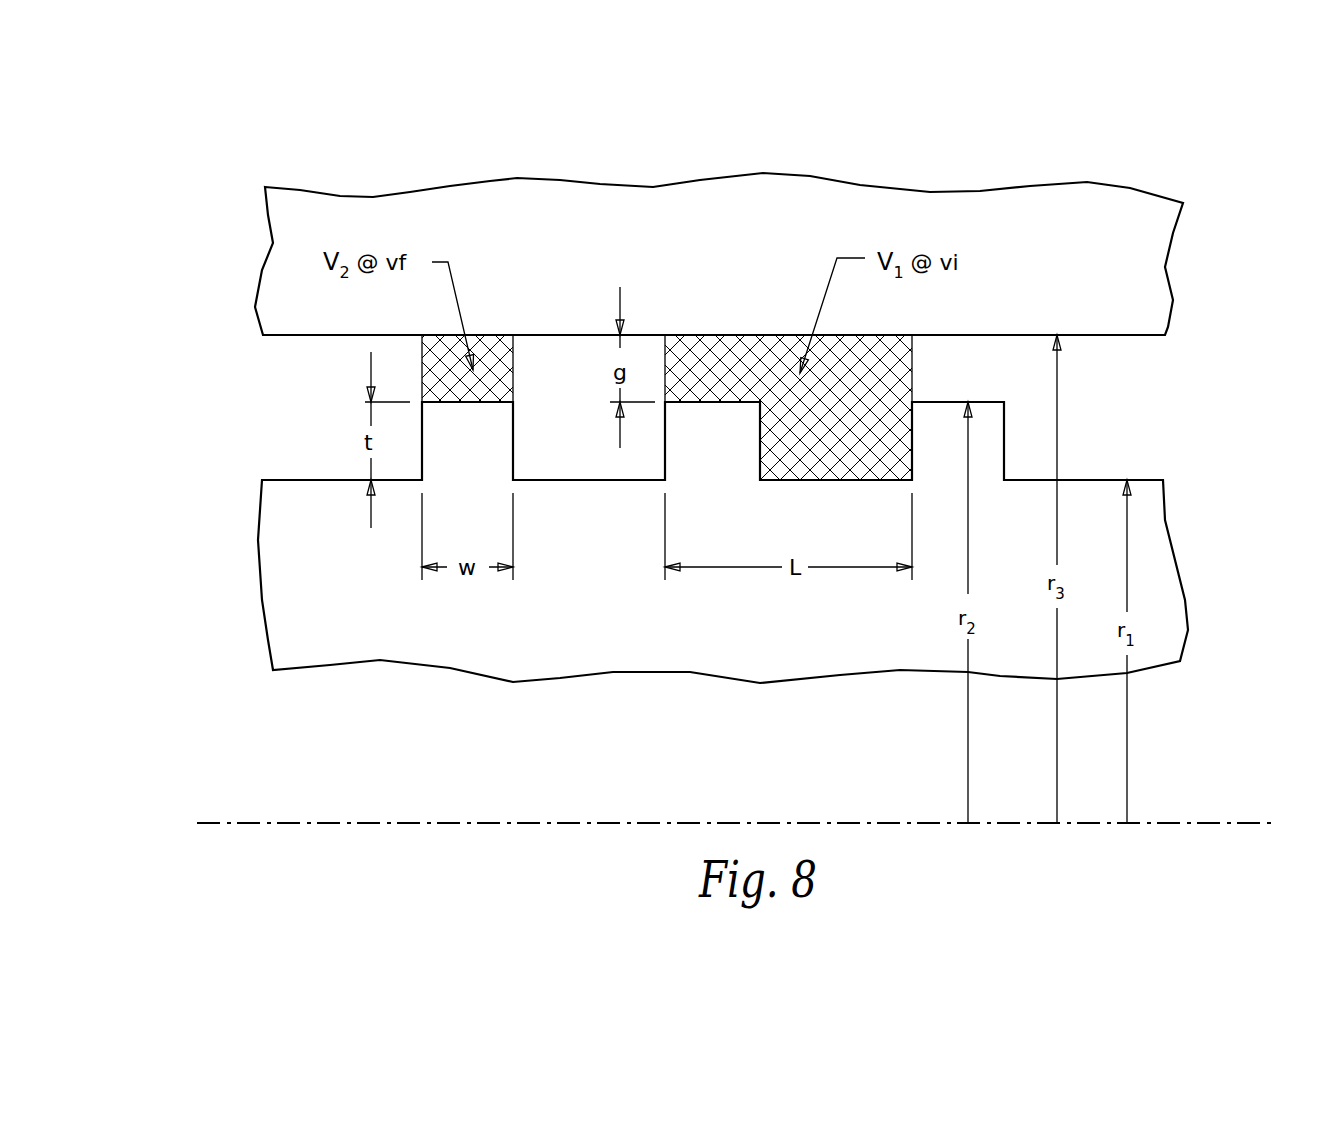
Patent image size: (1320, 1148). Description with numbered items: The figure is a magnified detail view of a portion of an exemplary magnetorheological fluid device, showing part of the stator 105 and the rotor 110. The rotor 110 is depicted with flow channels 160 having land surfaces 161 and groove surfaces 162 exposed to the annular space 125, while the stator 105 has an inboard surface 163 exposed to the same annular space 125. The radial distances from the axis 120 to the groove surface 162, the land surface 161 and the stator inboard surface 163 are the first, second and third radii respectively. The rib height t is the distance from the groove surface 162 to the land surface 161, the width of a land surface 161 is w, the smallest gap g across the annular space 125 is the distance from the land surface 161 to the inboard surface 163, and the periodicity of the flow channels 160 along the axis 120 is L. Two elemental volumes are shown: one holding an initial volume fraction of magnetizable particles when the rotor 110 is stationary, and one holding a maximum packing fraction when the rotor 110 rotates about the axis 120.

The stator 105 is at (758, 217).
The rotor 110 is at (593, 613).
The axis 120 is at (325, 822).
The annular space 125 is at (298, 425).
The flow channels 160 is at (570, 428).
The land surface 161 is at (950, 402).
The groove surface 162 is at (1089, 480).
The inboard surface 163 is at (306, 337).